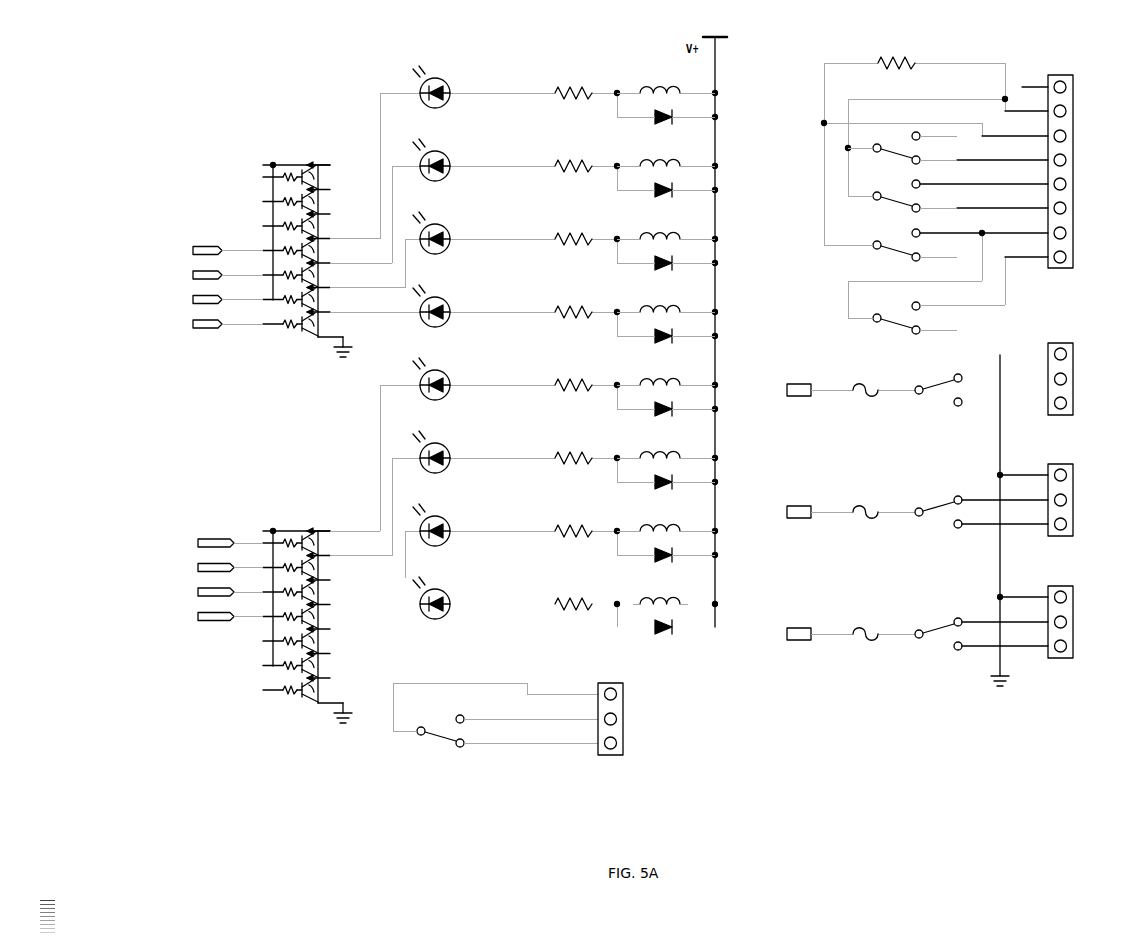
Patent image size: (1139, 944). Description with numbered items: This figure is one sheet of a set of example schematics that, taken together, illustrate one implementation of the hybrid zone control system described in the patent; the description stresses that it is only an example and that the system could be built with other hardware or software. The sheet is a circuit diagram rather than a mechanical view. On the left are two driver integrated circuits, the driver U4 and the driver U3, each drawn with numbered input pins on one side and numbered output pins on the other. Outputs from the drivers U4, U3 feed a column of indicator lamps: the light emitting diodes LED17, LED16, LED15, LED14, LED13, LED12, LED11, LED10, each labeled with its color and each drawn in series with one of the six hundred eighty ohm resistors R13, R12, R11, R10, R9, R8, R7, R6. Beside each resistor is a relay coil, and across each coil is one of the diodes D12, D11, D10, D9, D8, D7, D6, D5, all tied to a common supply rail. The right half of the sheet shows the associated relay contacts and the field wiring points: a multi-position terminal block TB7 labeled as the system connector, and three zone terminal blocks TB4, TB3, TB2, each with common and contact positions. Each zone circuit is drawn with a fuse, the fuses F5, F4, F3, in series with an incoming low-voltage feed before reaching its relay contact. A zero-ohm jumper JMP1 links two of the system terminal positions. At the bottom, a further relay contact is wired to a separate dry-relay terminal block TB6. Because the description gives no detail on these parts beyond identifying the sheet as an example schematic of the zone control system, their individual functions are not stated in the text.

The ULN2004_SMT Darlington driver U4 is at (276, 258).
The ULN2004_SMT Darlington driver U3 is at (279, 624).
The green LED LED17 is at (465, 92).
The yellow LED LED16 is at (470, 165).
The red LED LED15 is at (460, 238).
The red LED LED14 is at (460, 311).
The green LED LED13 is at (465, 384).
The green LED LED12 is at (465, 457).
The green LED LED11 is at (465, 530).
The green LED LED10 is at (465, 603).
The 680 ohm resistor R13 is at (573, 93).
The 680 ohm resistor R12 is at (573, 166).
The 680 ohm resistor R11 is at (573, 239).
The 680 ohm resistor R10 is at (573, 312).
The 680 ohm resistor R9 is at (573, 385).
The 680 ohm resistor R8 is at (573, 458).
The 680 ohm resistor R7 is at (573, 531).
The 680 ohm resistor R6 is at (573, 604).
The flyback diode D12 is at (666, 128).
The flyback diode D11 is at (666, 201).
The flyback diode D10 is at (666, 274).
The flyback diode D9 is at (666, 347).
The flyback diode D8 is at (666, 420).
The flyback diode D7 is at (666, 493).
The flyback diode D6 is at (666, 566).
The flyback diode D5 is at (649, 638).
The system terminal block TB7 is at (1073, 175).
The dry relay terminal block TB6 is at (633, 721).
The zone 1 terminal block TB4 is at (1069, 375).
The zone 2 terminal block TB3 is at (1069, 497).
The zone 3 terminal block TB2 is at (1069, 619).
The 0.55A fuse F5 is at (851, 366).
The 0.55A fuse F4 is at (851, 488).
The 0.55A fuse F3 is at (851, 610).
The 0 ohm jumper JMP1 is at (914, 65).